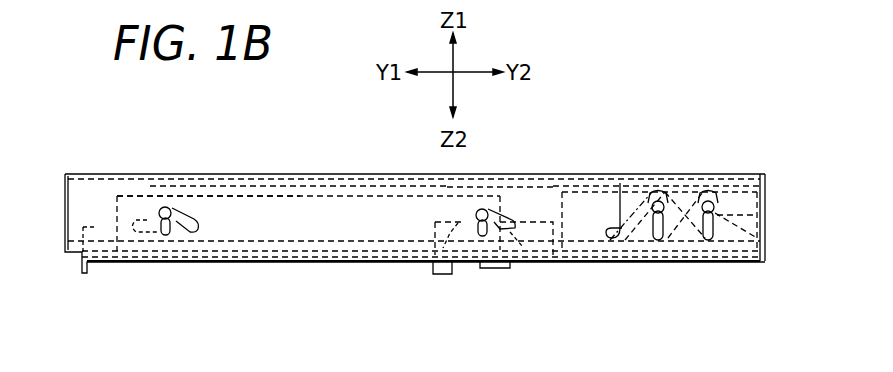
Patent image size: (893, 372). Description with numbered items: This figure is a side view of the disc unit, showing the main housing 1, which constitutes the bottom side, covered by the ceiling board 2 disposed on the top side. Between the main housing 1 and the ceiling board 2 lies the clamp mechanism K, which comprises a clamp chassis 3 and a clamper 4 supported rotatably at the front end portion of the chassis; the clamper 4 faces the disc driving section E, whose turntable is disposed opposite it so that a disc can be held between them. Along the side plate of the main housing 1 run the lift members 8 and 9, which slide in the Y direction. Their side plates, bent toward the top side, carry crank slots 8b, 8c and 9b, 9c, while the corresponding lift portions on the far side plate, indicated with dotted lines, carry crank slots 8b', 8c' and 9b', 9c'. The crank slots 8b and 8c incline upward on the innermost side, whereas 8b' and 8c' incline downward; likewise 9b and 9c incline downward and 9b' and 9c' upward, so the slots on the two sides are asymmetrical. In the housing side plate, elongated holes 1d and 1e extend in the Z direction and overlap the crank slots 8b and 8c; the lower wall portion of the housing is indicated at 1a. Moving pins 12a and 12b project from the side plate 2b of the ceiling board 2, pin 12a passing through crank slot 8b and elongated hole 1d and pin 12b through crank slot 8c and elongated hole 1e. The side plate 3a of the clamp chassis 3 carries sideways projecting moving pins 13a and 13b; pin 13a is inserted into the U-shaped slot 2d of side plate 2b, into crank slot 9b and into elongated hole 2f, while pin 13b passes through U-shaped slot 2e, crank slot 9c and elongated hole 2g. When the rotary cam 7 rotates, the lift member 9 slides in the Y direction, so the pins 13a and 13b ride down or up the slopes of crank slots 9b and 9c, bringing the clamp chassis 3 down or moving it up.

The main housing 1 is at (66, 262).
The base wall portion 1a is at (111, 250).
The elongated hole 1d is at (175, 237).
The elongated hole 1e is at (486, 236).
The ceiling board 2 is at (85, 190).
The side plate 2b is at (107, 190).
The U-shaped slot 2d is at (646, 192).
The U-shaped slot 2e is at (713, 192).
The elongated hole 2f is at (652, 236).
The elongated hole 2g is at (714, 219).
The clamp chassis 3 is at (532, 177).
The side plate 3a is at (765, 210).
The clamper 4 is at (447, 187).
The rotary cam 7 is at (563, 253).
The lift member 8 is at (287, 193).
The crank slot 8b is at (147, 181).
The crank slot 8b' is at (201, 168).
The crank slot 8c is at (417, 265).
The crank slot 8c' is at (513, 268).
The lift member 9 is at (578, 176).
The crank slot 9b is at (665, 168).
The crank slot 9b' is at (615, 179).
The crank slot 9c is at (778, 157).
The crank slot 9c' is at (714, 155).
The moving pin 12a is at (163, 226).
The moving pin 12b is at (480, 224).
The moving pin 13a is at (661, 241).
The moving pin 13b is at (710, 241).
The disc driving section E is at (432, 221).
The clamp mechanism K is at (533, 198).